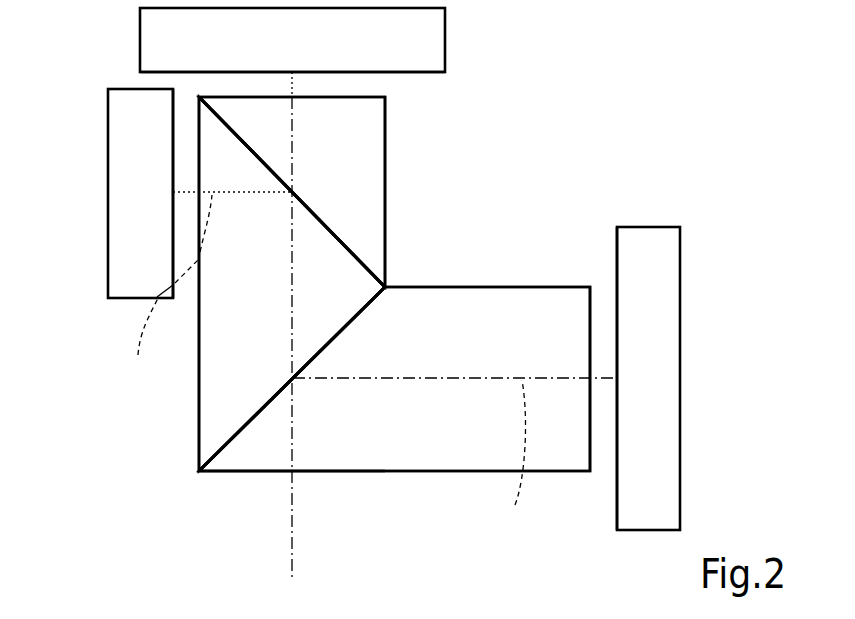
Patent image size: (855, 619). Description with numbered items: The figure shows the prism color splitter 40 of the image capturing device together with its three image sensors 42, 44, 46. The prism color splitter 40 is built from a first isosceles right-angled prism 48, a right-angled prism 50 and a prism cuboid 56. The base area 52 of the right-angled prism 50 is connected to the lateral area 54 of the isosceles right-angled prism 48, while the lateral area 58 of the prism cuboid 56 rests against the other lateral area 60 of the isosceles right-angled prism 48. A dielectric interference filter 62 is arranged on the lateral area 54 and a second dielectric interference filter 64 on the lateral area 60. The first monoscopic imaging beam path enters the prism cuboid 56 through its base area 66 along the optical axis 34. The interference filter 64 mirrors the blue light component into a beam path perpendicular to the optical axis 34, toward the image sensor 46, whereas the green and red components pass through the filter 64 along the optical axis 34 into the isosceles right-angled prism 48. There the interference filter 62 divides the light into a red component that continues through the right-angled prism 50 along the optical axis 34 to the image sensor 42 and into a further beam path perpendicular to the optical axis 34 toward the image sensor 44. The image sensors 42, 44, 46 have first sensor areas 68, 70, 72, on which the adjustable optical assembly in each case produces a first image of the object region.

The prism color splitter 40 is at (106, 489).
The image sensor 42 is at (308, 55).
The image sensor 44 is at (157, 211).
The image sensor 46 is at (658, 398).
The isosceles right-angled prism 48 is at (256, 313).
The right-angled prism 50 is at (368, 141).
The prism cuboid 56 is at (502, 352).
The base area 52 is at (328, 225).
The lateral area 54 is at (334, 255).
The dielectric interference filter 62 is at (306, 204).
The lateral area 58 is at (236, 441).
The lateral area 60 is at (229, 441).
The dielectric interference filter 64 is at (258, 410).
The base area 66 is at (220, 473).
The first sensor area 68 is at (349, 86).
The first sensor area 70 is at (190, 124).
The first sensor area 72 is at (604, 441).
The optical axis 34 is at (292, 552).